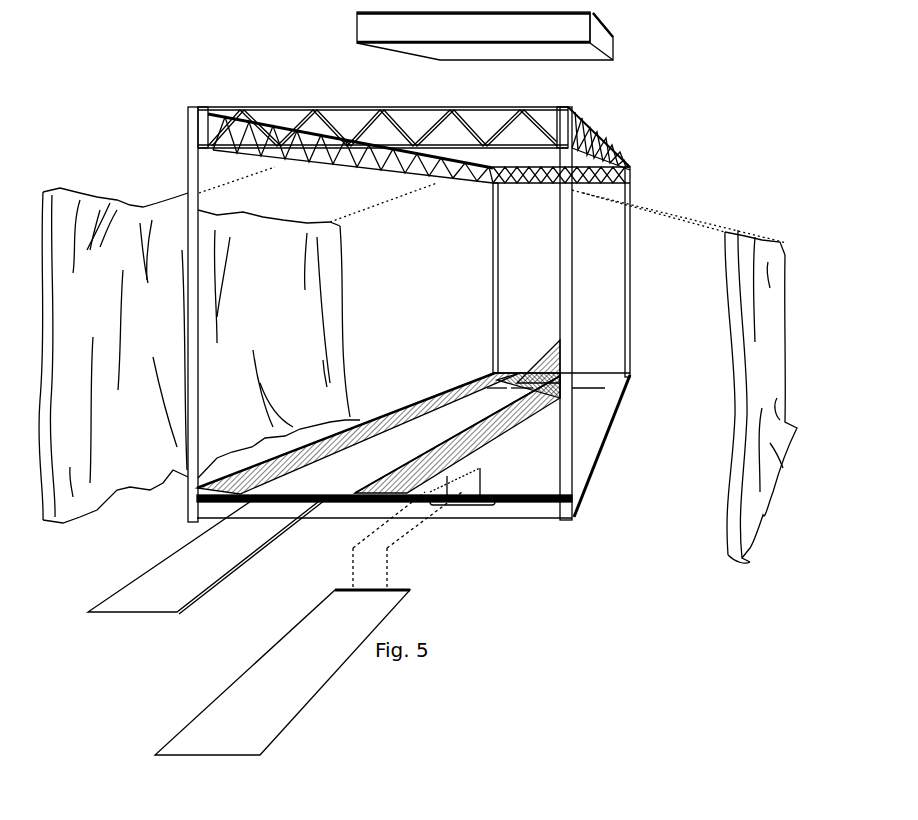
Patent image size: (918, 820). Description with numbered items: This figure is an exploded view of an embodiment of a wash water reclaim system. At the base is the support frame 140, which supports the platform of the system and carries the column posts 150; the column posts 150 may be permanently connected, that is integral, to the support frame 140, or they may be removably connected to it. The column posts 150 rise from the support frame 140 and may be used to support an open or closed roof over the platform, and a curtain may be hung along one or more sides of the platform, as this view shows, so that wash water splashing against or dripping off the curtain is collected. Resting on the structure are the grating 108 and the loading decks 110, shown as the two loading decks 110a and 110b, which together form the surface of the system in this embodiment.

The grating 108 is at (550, 343).
The loading decks 110 is at (190, 590).
The loading deck 110a is at (547, 455).
The loading deck 110b is at (410, 460).
The support frame 140 is at (508, 508).
The column posts 150 is at (185, 478).